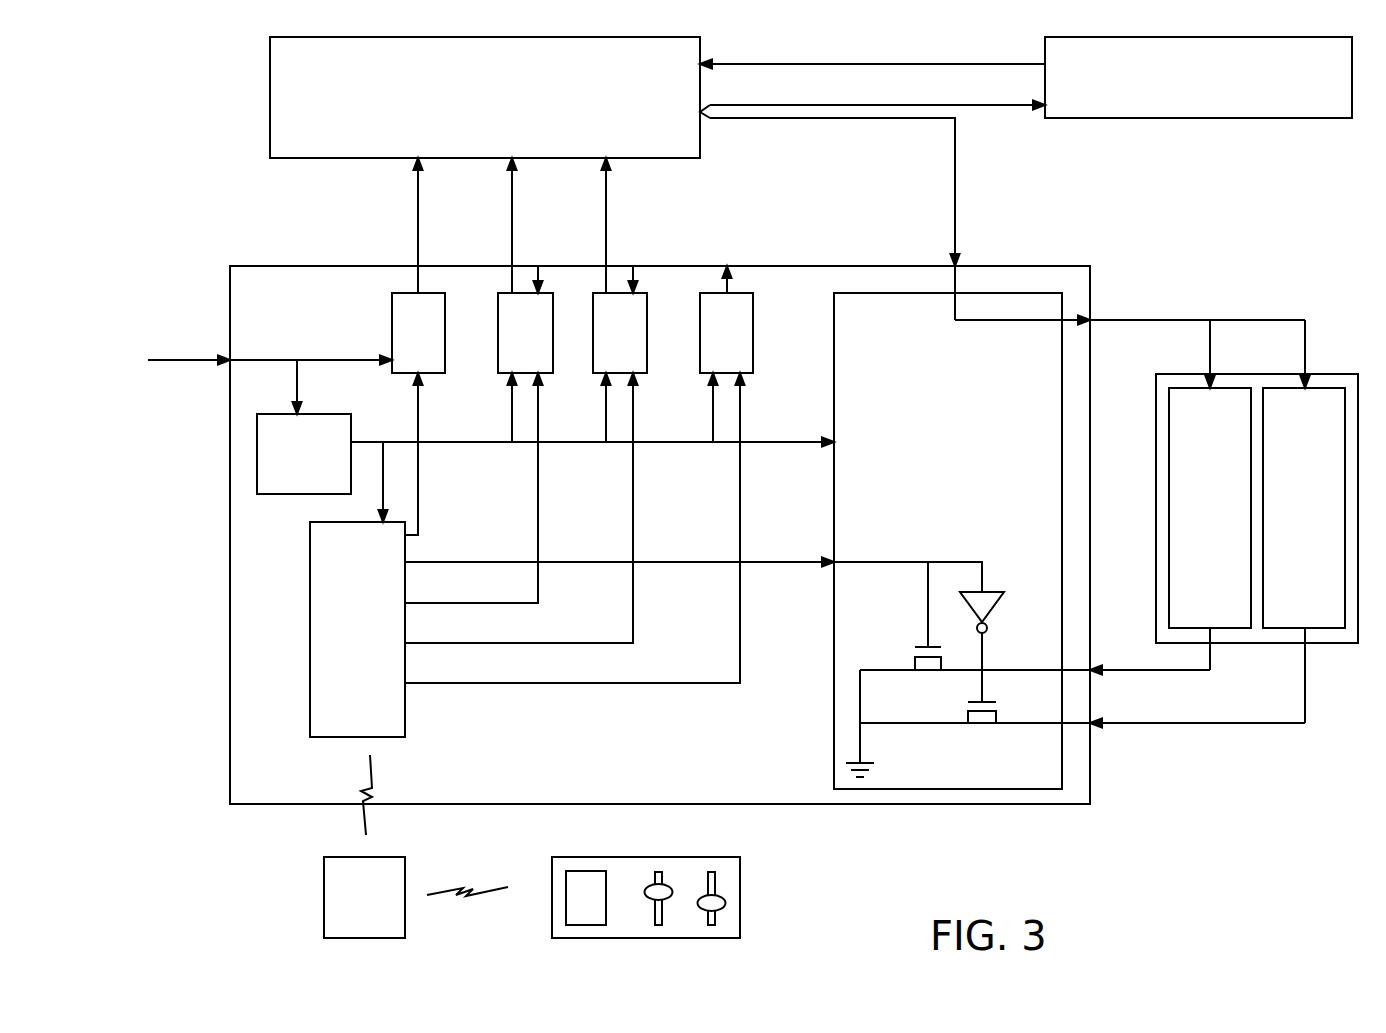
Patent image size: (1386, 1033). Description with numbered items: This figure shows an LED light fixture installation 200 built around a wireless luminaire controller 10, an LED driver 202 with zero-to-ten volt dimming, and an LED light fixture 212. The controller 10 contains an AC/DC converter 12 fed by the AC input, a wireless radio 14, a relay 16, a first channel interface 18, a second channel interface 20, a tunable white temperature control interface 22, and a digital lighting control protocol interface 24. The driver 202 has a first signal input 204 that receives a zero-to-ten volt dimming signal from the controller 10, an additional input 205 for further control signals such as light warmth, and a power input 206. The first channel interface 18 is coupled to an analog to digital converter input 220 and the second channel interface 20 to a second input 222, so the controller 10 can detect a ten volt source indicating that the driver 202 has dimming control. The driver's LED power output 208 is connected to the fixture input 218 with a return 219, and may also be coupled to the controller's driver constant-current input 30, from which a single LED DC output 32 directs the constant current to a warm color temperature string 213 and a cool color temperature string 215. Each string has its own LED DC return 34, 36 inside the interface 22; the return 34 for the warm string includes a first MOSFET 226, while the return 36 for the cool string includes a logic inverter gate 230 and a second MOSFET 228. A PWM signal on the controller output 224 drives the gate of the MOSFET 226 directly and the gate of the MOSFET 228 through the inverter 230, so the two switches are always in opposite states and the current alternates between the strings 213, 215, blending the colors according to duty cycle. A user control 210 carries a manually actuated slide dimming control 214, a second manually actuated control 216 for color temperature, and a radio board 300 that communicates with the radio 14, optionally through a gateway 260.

The LED light fixture installation 200 is at (218, 99).
The LED driver 202 is at (447, 83).
The first signal input 204 is at (514, 163).
The additional input 205 is at (608, 163).
The power input 206 is at (416, 163).
The LED power output 208 is at (704, 115).
The user control 210 is at (742, 886).
The LED light fixture 212 is at (1115, 93).
The warm color temperature LED string 213 is at (1187, 425).
The manually actuated slide dimming control 214 is at (658, 872).
The cool color temperature LED string 215 is at (1282, 425).
The second manually actuated control 216 is at (712, 872).
The LED light fixture input 218 is at (1003, 107).
The return 219 is at (953, 63).
The analog to digital converter input 220 is at (540, 266).
The second input 222 is at (634, 266).
The controller output 224 is at (471, 560).
The first MOSFET 226 is at (915, 657).
The second MOSFET 228 is at (985, 713).
The logic inverter gate 230 is at (990, 590).
The gateway 260 is at (342, 905).
The radio board 300 is at (572, 885).
The wireless luminaire controller 10 is at (645, 750).
The AC/DC converter 12 is at (288, 467).
The wireless radio 14 is at (335, 645).
The relay 16 is at (403, 338).
The first channel interface 18 is at (510, 338).
The second channel interface 20 is at (605, 338).
The tunable white temperature control interface 22 is at (935, 455).
The digital lighting control protocol interface 24 is at (712, 338).
The driver constant-current input 30 is at (953, 265).
The LED DC output 32 is at (1092, 320).
The LED DC return for warm string 34 is at (1095, 672).
The LED DC return for cool string 36 is at (1095, 727).